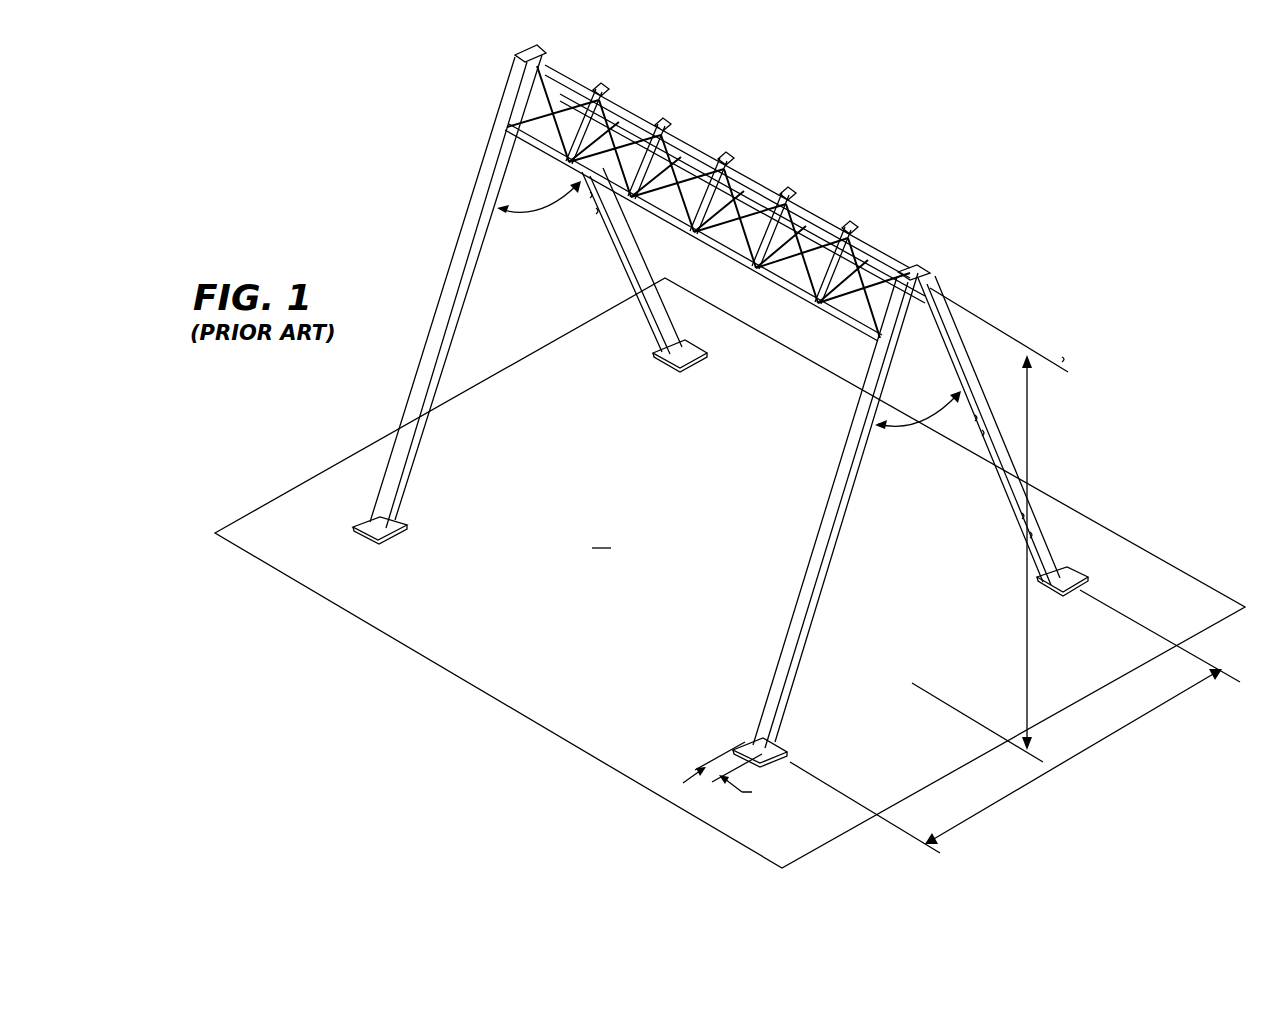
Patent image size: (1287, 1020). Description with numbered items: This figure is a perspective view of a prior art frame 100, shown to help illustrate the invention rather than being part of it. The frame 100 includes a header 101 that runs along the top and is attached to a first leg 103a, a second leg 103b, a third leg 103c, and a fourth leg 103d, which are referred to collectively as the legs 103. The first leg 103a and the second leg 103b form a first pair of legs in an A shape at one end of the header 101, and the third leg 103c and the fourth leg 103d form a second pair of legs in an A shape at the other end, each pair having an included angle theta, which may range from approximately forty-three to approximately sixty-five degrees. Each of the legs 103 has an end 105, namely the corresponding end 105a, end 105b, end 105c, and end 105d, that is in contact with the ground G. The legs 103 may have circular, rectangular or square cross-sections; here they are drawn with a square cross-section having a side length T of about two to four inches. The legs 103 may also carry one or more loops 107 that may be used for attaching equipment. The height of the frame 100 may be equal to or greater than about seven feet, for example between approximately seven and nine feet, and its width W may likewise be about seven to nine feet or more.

The frame 100 is at (487, 72).
The header 101 is at (700, 140).
The legs 103 is at (443, 245).
The first leg 103a is at (404, 398).
The second leg 103b is at (620, 260).
The third leg 103c is at (795, 600).
The fourth leg 103d is at (1010, 485).
The end 105 is at (303, 468).
The end 105a is at (362, 538).
The end 105b is at (660, 362).
The end 105c is at (742, 746).
The end 105d is at (1040, 588).
The loop 107 is at (600, 222).